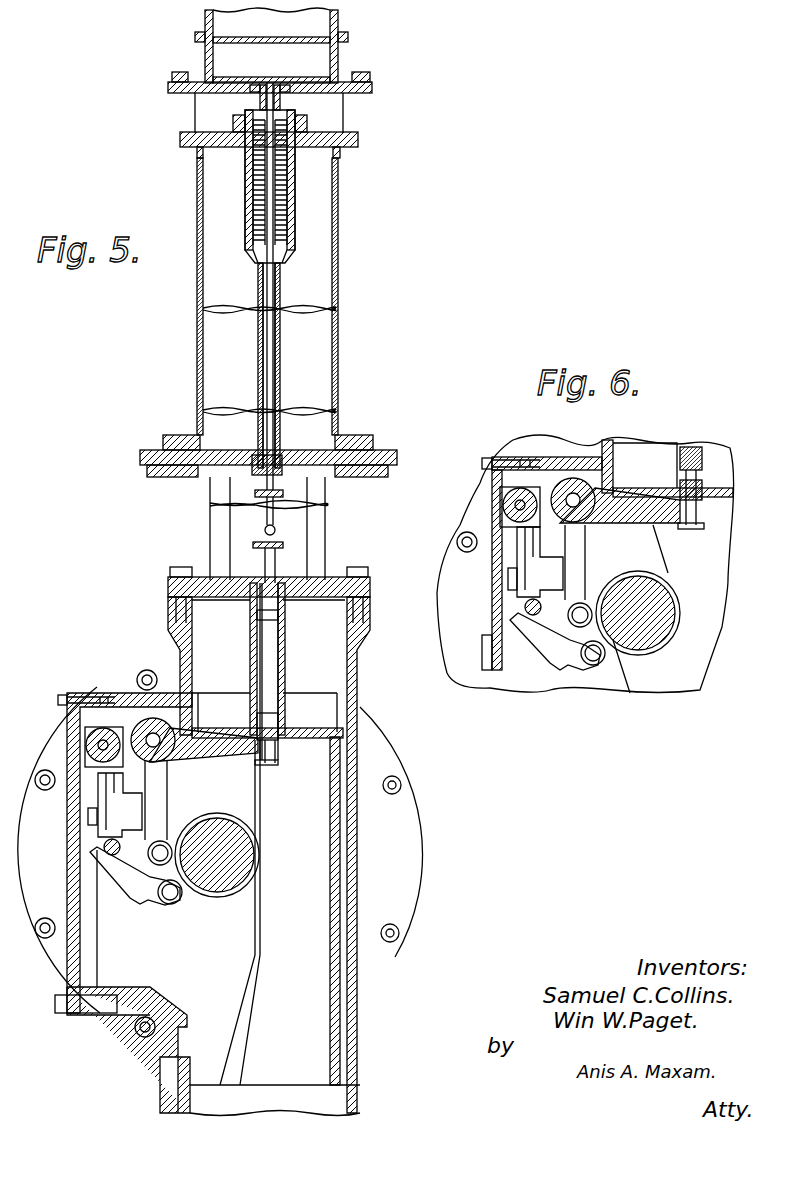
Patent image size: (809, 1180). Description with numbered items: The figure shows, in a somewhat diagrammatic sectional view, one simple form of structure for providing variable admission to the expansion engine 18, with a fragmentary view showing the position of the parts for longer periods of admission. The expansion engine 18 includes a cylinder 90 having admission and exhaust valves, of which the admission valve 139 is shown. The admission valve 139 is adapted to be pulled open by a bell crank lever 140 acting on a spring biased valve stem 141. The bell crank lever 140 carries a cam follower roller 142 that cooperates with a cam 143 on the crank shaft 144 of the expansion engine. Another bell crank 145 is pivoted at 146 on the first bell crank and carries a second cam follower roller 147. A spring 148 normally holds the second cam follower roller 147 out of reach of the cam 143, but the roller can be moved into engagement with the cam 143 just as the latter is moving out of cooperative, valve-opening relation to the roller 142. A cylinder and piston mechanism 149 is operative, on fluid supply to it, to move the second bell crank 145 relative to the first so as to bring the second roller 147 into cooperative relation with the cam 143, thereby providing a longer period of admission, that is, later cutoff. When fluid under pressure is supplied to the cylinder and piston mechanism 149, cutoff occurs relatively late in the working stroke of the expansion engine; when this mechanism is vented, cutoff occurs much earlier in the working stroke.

In FIG. 5, the expansion engine 18 is at (357, 665).
In FIG. 6, the expansion engine 18 is at (593, 455).
In FIG. 5, the cylinder 90 is at (345, 72).
In FIG. 5, the admission valve 139 is at (255, 95).
In FIG. 5, the bell crank lever 140 is at (245, 757).
In FIG. 6, the bell crank lever 140 is at (633, 513).
In FIG. 5, the valve stem 141 is at (280, 765).
In FIG. 6, the valve stem 141 is at (704, 513).
In FIG. 5, the cam follower roller 142 is at (165, 840).
In FIG. 6, the cam follower roller 142 is at (590, 600).
In FIG. 5, the cam 143 is at (195, 815).
In FIG. 6, the cam 143 is at (625, 655).
In FIG. 5, the crank shaft 144 is at (235, 857).
In FIG. 6, the crank shaft 144 is at (663, 610).
In FIG. 5, the second bell crank 145 is at (98, 795).
In FIG. 6, the second bell crank 145 is at (510, 528).
In FIG. 5, the pivot 146 is at (104, 848).
In FIG. 6, the pivot 146 is at (525, 607).
In FIG. 5, the second cam follower roller 147 is at (178, 903).
In FIG. 6, the second cam follower roller 147 is at (593, 666).
In FIG. 5, the spring 148 is at (88, 818).
In FIG. 6, the spring 148 is at (508, 578).
In FIG. 5, the cylinder and piston mechanism 149 is at (108, 735).
In FIG. 6, the cylinder and piston mechanism 149 is at (527, 490).